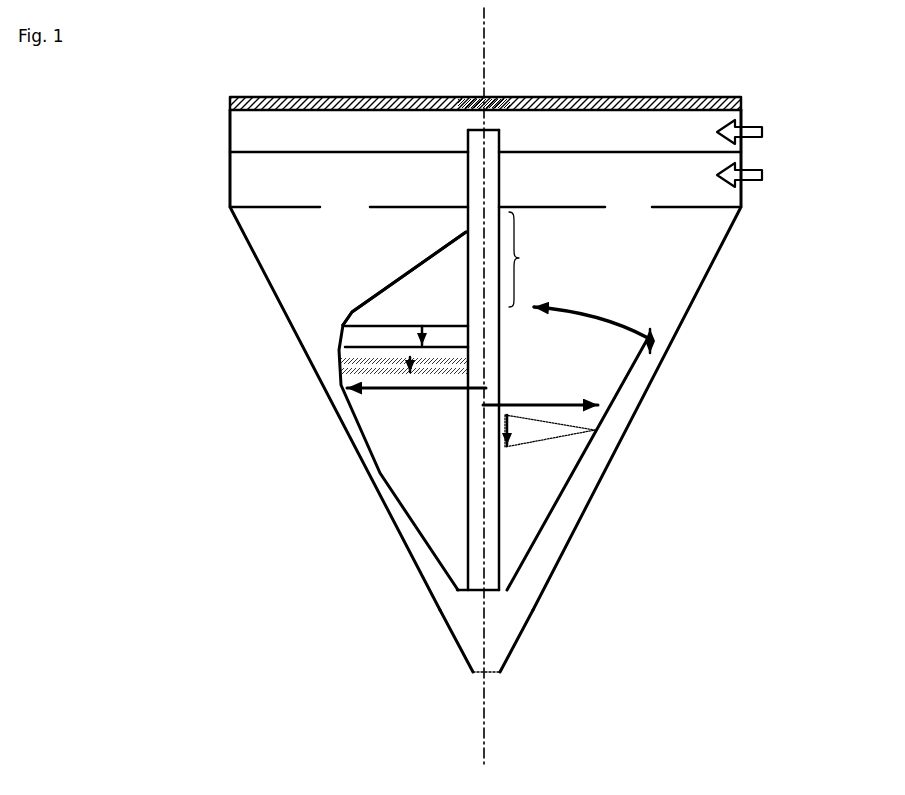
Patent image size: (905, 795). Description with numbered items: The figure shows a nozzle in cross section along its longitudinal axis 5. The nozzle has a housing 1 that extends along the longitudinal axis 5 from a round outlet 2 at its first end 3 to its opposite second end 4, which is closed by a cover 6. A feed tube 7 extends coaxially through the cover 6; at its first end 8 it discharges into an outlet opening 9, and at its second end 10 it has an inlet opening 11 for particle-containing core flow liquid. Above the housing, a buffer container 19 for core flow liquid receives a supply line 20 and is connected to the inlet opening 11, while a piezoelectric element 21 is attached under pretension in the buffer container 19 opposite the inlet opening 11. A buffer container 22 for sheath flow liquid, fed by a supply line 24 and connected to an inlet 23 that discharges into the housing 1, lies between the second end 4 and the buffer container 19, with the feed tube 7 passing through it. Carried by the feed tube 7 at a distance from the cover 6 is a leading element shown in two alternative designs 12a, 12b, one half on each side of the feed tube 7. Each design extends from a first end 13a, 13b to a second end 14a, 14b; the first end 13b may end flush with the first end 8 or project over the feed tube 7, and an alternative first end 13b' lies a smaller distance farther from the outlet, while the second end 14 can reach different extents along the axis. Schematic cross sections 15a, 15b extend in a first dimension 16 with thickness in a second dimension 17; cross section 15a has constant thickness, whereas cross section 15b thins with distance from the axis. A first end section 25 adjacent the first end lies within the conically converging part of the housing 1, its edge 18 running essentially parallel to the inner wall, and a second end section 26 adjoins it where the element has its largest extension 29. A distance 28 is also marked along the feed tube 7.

The housing 1 is at (276, 297).
The outlet 2 is at (495, 680).
The first end 3 is at (462, 670).
The second end 4 is at (229, 210).
The longitudinal axis 5 is at (487, 752).
The cover 6 is at (337, 207).
The feed tube 7 is at (492, 535).
The first end 8 is at (502, 594).
The outlet opening 9 is at (488, 598).
The second end 10 is at (594, 96).
The inlet opening 11 is at (502, 133).
The leading element 12a is at (388, 425).
The leading element 12b is at (660, 346).
The first end 13a is at (456, 589).
The first end 13b is at (604, 609).
The first end 13b' is at (619, 562).
The second end 14 is at (466, 238).
The second end 14a is at (466, 238).
The second end 14b is at (505, 307).
The cross section 15a is at (406, 365).
The cross section 15b is at (588, 431).
The first dimension 16 is at (449, 388).
The second dimension 17 is at (408, 337).
The edge 18 is at (413, 530).
The buffer container for core flow liquid 19 is at (357, 122).
The supply line for core flow liquid 20 is at (770, 129).
The piezoelectric element 21 is at (490, 127).
The buffer container for sheath flow liquid 22 is at (400, 177).
The inlet for sheath flow liquid 23 is at (260, 202).
The supply line for sheath flow liquid 24 is at (770, 175).
The first end section 25 is at (505, 572).
The second end section 26 is at (538, 305).
The distance 28 is at (526, 259).
The largest extension 29 is at (656, 334).